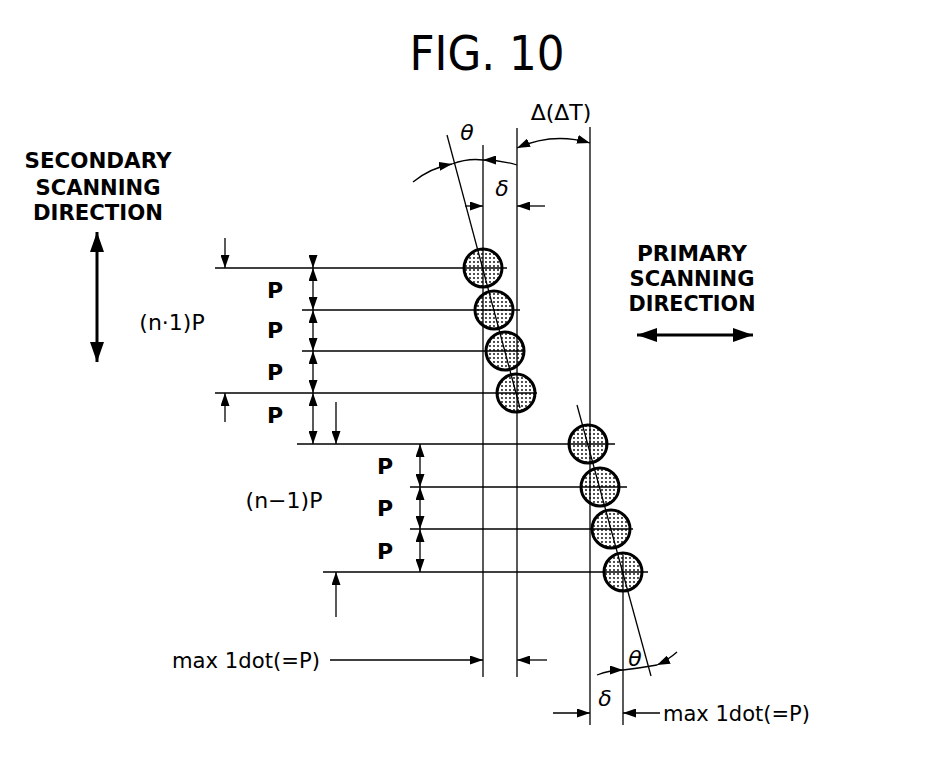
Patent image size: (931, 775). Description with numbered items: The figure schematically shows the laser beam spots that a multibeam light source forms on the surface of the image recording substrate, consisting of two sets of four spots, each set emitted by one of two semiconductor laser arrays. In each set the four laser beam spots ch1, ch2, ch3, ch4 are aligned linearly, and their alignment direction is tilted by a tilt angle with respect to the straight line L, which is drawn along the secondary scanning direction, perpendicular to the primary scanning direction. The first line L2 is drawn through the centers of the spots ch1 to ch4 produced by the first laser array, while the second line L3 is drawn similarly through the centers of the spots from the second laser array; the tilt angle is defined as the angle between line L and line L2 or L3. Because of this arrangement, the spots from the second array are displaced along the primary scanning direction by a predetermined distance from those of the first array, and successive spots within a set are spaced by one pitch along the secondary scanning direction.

The straight line along secondary scanning direction L is at (485, 150).
The first line L2 is at (458, 180).
The second line L3 is at (640, 632).
The laser beam spot ch1 is at (580, 356).
The laser beam spot ch2 is at (586, 398).
The laser beam spot ch3 is at (591, 440).
The laser beam spot ch4 is at (597, 482).